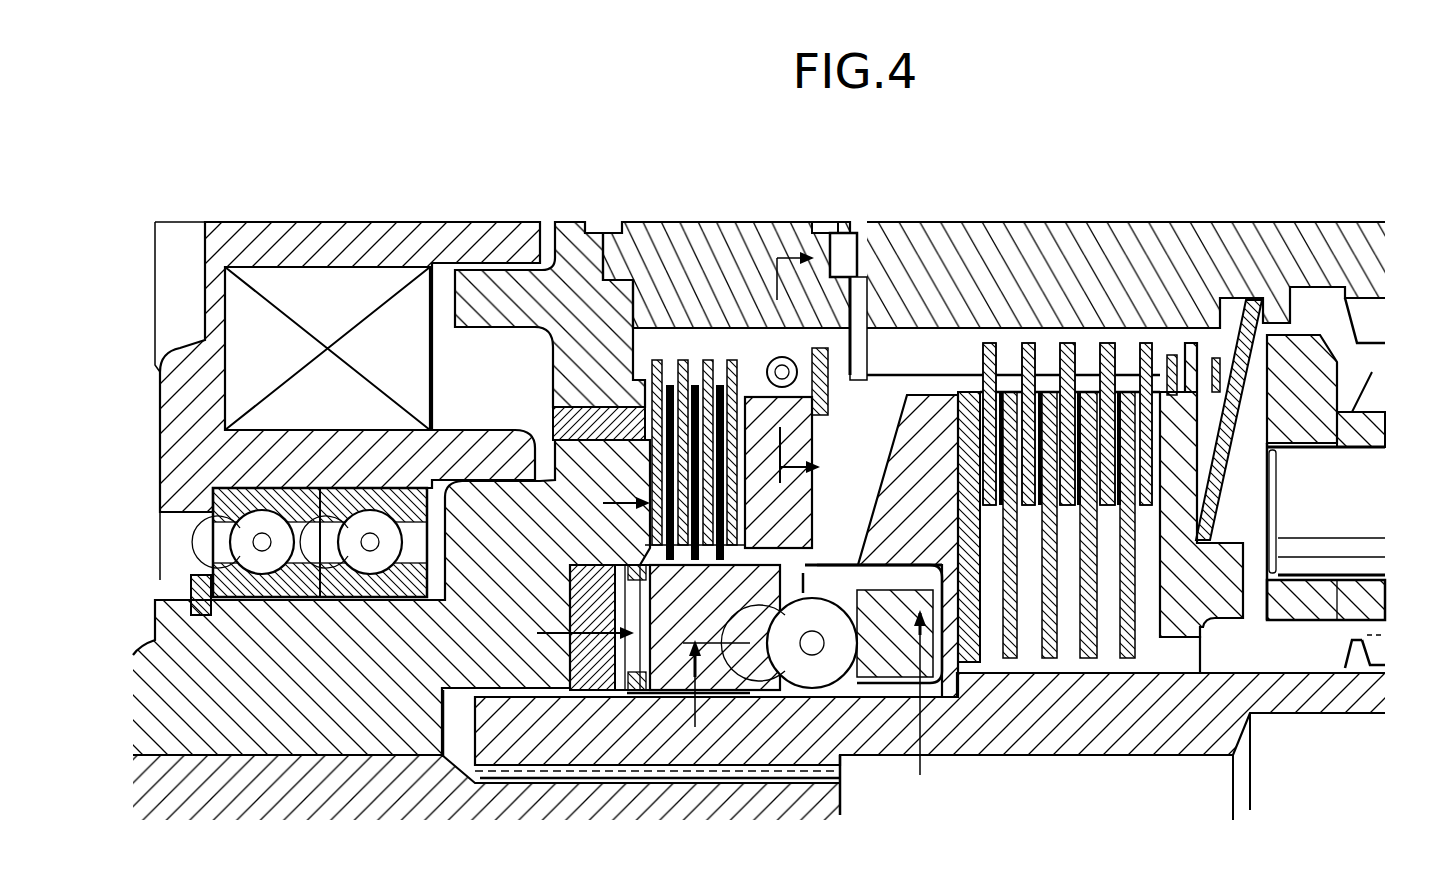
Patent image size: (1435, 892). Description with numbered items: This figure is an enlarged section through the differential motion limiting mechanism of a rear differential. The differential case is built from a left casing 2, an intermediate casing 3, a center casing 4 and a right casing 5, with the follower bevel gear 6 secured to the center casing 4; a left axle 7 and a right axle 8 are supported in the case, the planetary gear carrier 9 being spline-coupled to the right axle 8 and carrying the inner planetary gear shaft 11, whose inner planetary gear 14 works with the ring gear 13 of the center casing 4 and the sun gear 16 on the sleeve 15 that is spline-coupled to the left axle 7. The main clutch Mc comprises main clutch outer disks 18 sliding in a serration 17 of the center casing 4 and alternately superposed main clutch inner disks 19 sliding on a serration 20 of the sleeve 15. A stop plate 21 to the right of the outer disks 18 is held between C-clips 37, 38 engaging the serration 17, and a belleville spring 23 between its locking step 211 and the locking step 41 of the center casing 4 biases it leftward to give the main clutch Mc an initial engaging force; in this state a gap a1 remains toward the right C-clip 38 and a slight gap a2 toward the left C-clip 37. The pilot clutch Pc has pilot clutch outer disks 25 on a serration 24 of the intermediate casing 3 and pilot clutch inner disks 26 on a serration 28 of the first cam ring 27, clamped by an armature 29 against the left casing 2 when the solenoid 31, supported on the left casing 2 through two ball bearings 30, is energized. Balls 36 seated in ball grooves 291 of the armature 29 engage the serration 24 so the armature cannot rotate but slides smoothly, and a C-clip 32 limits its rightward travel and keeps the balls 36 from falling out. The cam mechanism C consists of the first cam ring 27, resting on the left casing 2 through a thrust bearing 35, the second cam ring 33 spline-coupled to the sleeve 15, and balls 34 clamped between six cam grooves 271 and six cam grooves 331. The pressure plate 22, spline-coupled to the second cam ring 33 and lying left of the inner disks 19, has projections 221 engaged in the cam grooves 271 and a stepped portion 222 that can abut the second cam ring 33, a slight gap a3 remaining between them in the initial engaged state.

The left casing 2 is at (565, 235).
The intermediate casing 3 is at (692, 248).
The center casing 4 is at (1018, 247).
The right casing 5 is at (824, 360).
The follower bevel gear 6 is at (575, 569).
The left axle 7 is at (843, 800).
The right axle 8 is at (806, 711).
The planetary gear carrier 9 is at (1292, 352).
The inner planetary gear shaft 11 is at (1326, 518).
The ring gear 13 is at (1378, 333).
The inner planetary gear 14 is at (1378, 388).
The sleeve 15 is at (1165, 732).
The sun gear 16 is at (1350, 648).
The serration 17 is at (885, 413).
The main clutch outer disks 18 is at (1106, 390).
The main clutch inner disks 19 is at (1126, 662).
The serration 20 is at (1200, 650).
The stop plate 21 is at (1202, 345).
The pressure plate 22 is at (940, 378).
The belleville spring 23 is at (1226, 440).
The serration 24 is at (650, 350).
The pilot clutch outer disks 25 is at (710, 352).
The pilot clutch inner disks 26 is at (715, 572).
The first cam ring 27 is at (740, 700).
The serration 28 is at (640, 530).
The armature 29 is at (828, 448).
The ball bearings 30 is at (370, 530).
The solenoid 31 is at (350, 288).
The C-clip 32 is at (825, 365).
The second cam ring 33 is at (887, 585).
The balls 34 is at (823, 665).
The thrust bearing 35 is at (600, 592).
The balls 36 is at (770, 362).
The C-clip 37 is at (1167, 355).
The C-clip 38 is at (1235, 420).
The locking step 41 is at (1255, 330).
The locking step 211 is at (1233, 550).
The projections 221 is at (817, 565).
The stepped portion 222 is at (925, 585).
The cam grooves 271 is at (735, 625).
The ball grooves 291 is at (828, 406).
The cam grooves 331 is at (895, 633).
The pilot clutch Pc is at (668, 322).
The main clutch Mc is at (927, 370).
The cam mechanism C is at (852, 700).
The gap a1 is at (1258, 365).
The gap a2 is at (1172, 380).
The gap a3 is at (962, 690).